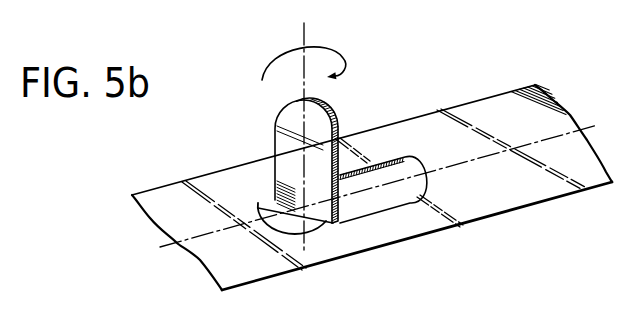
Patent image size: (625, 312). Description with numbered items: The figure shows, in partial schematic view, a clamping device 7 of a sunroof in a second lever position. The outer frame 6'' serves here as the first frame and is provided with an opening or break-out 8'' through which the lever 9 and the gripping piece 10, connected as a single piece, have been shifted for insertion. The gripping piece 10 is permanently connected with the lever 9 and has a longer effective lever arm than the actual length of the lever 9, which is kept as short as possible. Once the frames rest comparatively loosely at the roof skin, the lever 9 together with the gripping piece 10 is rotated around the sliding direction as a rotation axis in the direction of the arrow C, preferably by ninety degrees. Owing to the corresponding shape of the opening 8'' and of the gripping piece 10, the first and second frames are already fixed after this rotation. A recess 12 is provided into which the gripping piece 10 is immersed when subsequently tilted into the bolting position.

The clamping device 7 is at (412, 64).
The outer frame 6'' is at (532, 72).
The opening or break-out 8'' is at (275, 160).
The recess 12 is at (368, 177).
The lever 9 is at (350, 207).
The gripping piece 10 is at (297, 167).
The direction of rotation arrow C is at (337, 50).